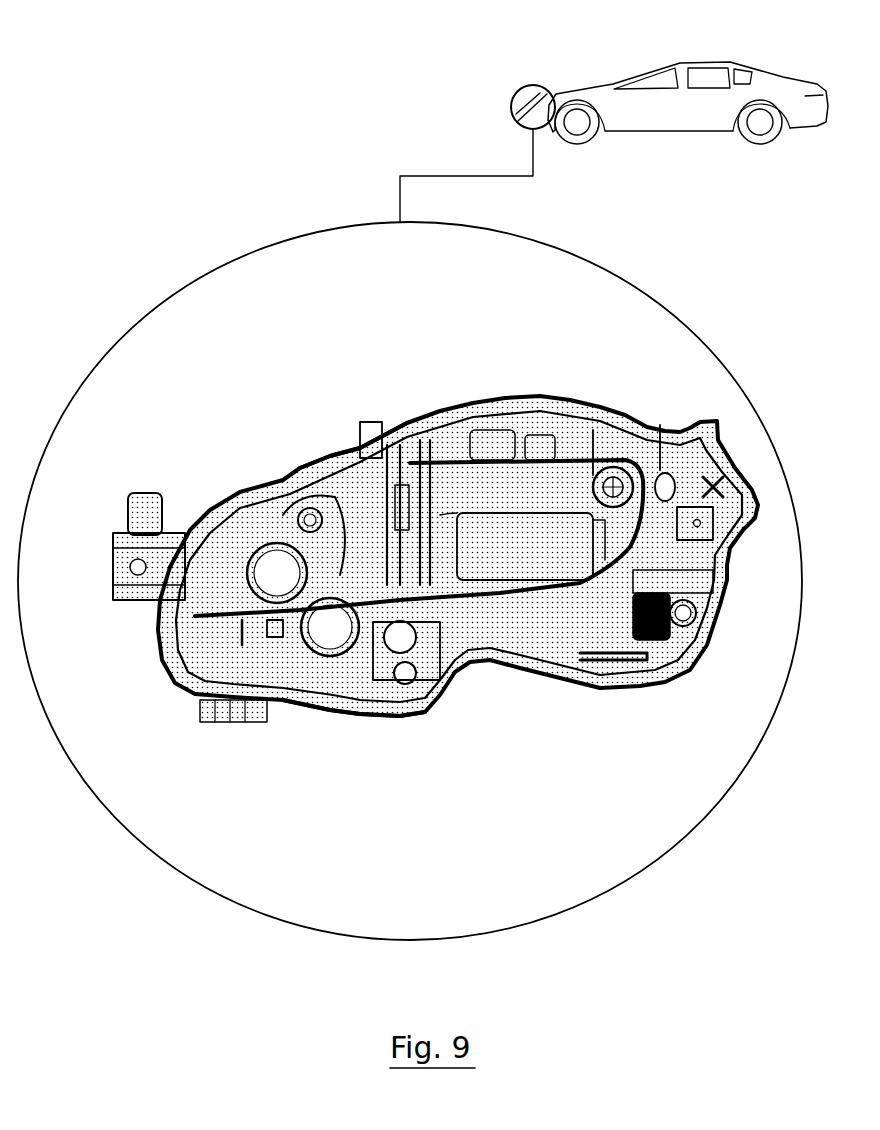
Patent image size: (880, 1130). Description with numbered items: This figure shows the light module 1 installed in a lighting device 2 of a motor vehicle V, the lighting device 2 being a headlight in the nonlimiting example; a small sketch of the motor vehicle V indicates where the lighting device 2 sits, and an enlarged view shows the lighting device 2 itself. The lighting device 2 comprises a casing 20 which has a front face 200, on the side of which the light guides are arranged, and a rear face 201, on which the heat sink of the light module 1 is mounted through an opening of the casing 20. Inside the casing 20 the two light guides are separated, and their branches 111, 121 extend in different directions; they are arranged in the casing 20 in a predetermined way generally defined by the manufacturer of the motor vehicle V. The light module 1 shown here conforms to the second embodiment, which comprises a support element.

The light module 1 is at (446, 559).
The lighting device 2 is at (525, 84).
The motor vehicle V is at (657, 62).
The casing 20 is at (282, 481).
The front face 200 is at (378, 755).
The rear face 201 is at (337, 433).
The branch 111 is at (474, 465).
The branch 121 is at (513, 594).